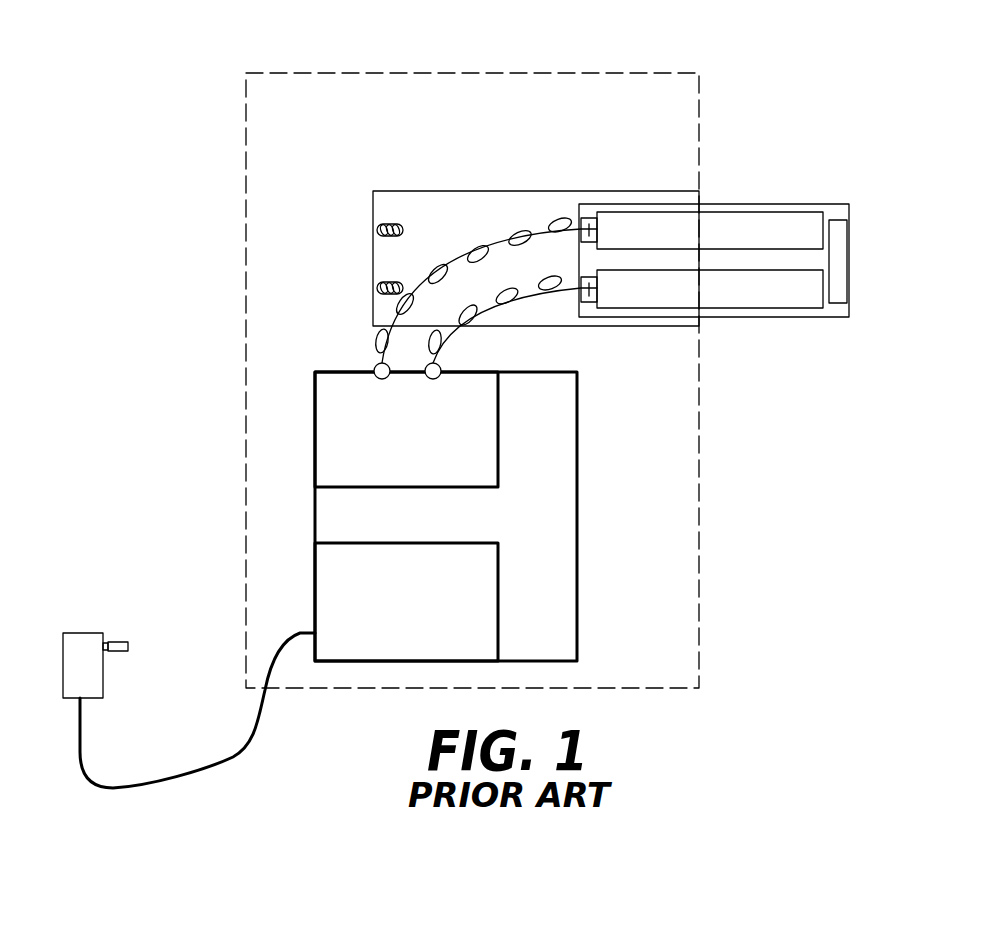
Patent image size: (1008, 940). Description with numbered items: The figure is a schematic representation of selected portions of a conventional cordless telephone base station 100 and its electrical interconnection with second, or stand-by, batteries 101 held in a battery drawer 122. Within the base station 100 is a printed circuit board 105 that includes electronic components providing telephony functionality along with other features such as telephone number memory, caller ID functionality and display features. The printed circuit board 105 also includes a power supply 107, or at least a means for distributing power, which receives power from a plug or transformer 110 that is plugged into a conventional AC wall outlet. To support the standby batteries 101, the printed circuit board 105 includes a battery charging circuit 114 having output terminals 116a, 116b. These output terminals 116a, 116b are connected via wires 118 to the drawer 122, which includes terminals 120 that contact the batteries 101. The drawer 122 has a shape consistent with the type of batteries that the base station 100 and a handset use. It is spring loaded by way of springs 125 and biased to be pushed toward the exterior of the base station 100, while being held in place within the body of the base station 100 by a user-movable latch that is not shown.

The cordless telephone base station 100 is at (698, 495).
The batteries 101 is at (753, 282).
The printed circuit board 105 is at (577, 620).
The power supply 107 is at (335, 645).
The plug or transformer 110 is at (88, 638).
The battery charging circuit 114 is at (485, 468).
The output terminal 116a is at (374, 371).
The output terminal 116b is at (441, 372).
The wires 118 is at (516, 290).
The terminals 120 is at (592, 287).
The drawer 122 is at (852, 257).
The springs 125 is at (378, 287).